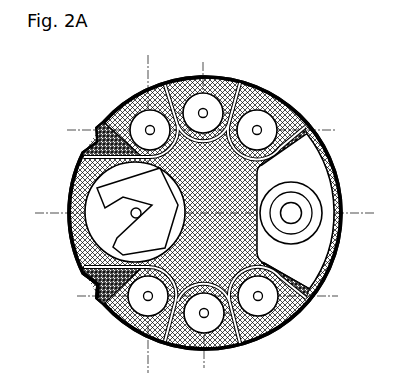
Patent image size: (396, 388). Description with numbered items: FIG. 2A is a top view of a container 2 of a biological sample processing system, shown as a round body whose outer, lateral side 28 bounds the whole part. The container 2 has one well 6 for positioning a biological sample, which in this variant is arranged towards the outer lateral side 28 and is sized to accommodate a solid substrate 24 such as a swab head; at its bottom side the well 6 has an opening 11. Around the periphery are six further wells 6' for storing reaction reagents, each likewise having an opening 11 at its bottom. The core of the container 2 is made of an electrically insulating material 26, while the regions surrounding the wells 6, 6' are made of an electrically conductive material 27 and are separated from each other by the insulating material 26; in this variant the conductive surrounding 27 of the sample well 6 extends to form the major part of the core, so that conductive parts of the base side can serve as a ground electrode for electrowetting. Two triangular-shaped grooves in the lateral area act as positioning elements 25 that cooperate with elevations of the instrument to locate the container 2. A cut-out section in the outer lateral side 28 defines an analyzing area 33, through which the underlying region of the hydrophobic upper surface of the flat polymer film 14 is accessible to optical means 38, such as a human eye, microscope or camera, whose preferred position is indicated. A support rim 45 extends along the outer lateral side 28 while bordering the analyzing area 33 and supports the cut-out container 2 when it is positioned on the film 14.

The container 2 is at (67, 96).
The well 6 is at (135, 212).
The further wells 6' is at (291, 110).
The opening 11 is at (130, 210).
The flat polymer film 14 is at (303, 174).
The solid substrate 24 is at (123, 185).
The positioning elements 25 is at (90, 138).
The electrically insulating material 26 is at (165, 80).
The electrically conductive material 27 is at (246, 79).
The outer lateral side 28 is at (78, 267).
The analyzing area 33 is at (294, 235).
The optical means 38 is at (304, 223).
The support rim 45 is at (314, 279).